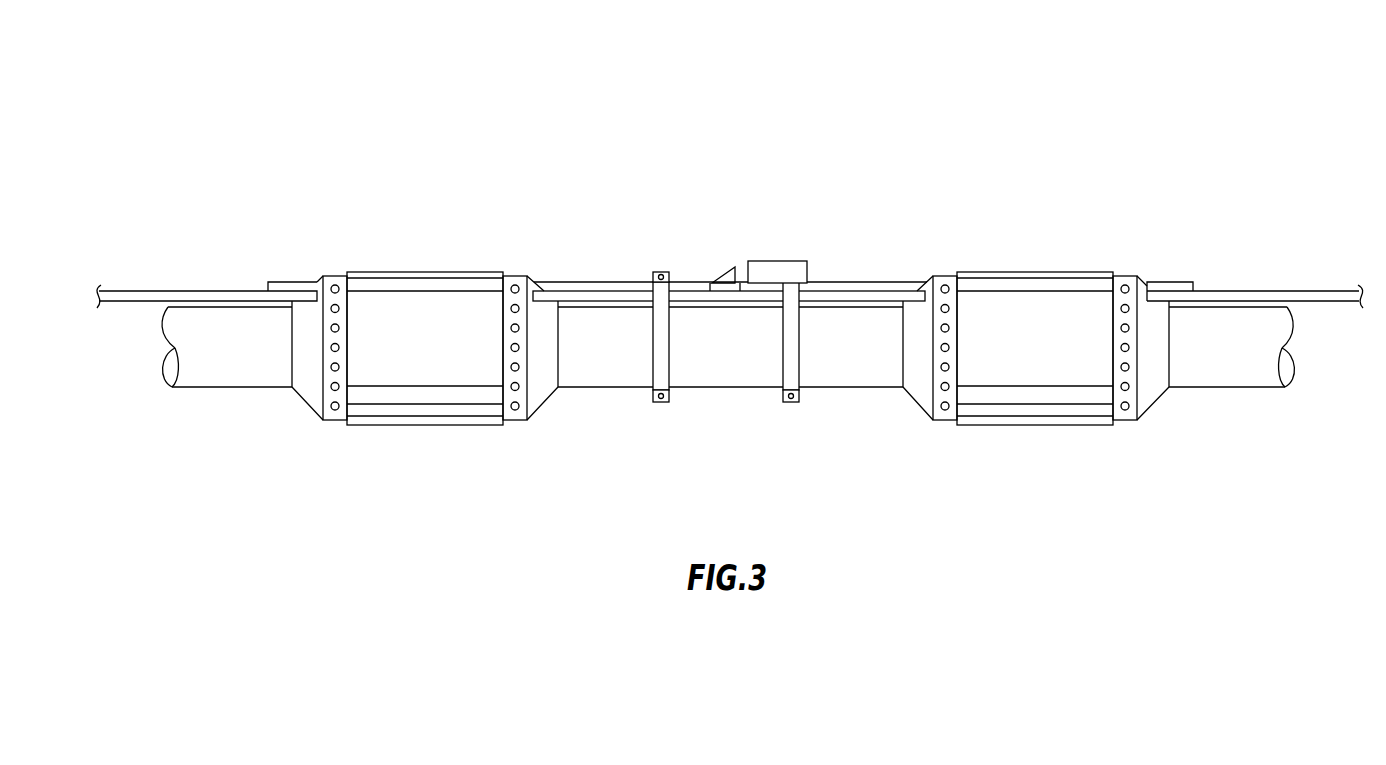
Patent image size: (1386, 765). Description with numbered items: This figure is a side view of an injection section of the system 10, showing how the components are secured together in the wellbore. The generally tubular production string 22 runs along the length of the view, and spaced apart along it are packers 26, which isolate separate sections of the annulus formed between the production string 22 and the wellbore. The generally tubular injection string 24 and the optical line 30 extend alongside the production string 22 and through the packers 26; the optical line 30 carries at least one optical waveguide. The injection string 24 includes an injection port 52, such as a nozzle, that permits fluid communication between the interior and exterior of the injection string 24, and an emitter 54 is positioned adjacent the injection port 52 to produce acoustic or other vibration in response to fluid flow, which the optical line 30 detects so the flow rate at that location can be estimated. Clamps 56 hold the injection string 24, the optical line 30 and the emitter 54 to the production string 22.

The system 10 is at (1100, 133).
The production string 22 is at (186, 392).
The injection string 24 is at (272, 276).
The packers 26 is at (440, 425).
The optical line 30 is at (167, 284).
The injection ports 52 is at (725, 270).
The emitter 54 is at (757, 261).
The clamps 56 is at (668, 402).